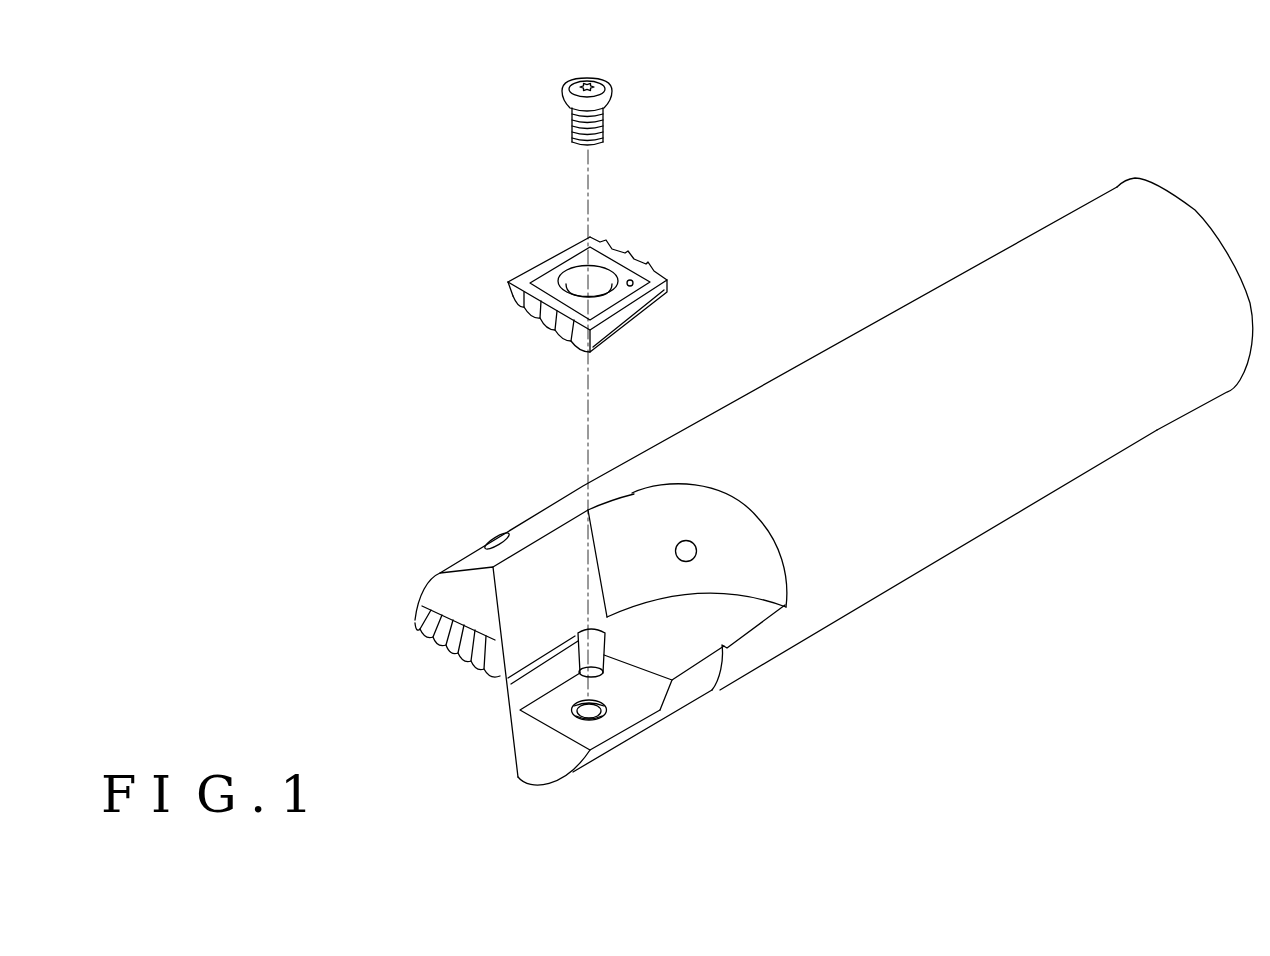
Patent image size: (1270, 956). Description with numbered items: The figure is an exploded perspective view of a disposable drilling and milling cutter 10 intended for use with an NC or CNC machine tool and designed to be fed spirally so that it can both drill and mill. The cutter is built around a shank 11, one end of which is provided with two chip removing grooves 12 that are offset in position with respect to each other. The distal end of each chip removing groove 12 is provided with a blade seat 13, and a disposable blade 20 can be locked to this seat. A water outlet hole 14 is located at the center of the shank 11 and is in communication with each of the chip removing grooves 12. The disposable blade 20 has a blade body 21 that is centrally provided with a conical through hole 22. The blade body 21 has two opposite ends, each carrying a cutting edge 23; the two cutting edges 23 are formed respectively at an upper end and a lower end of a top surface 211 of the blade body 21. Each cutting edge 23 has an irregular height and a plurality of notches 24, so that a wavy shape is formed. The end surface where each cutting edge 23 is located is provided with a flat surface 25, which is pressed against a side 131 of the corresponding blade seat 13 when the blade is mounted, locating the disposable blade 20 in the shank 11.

The disposable drilling and milling cutter 10 is at (735, 318).
The shank 11 is at (991, 509).
The chip removing groove 12 is at (643, 557).
The blade seat 13 is at (573, 727).
The side of the blade seat 131 is at (643, 692).
The water outlet hole 14 is at (690, 557).
The disposable blade 20 is at (523, 258).
The blade body 21 is at (632, 318).
The top surface of the blade body 211 is at (626, 272).
The conical through hole 22 is at (575, 277).
The cutting edge 23 is at (645, 262).
The notch 24 is at (602, 243).
The flat surface 25 is at (533, 323).